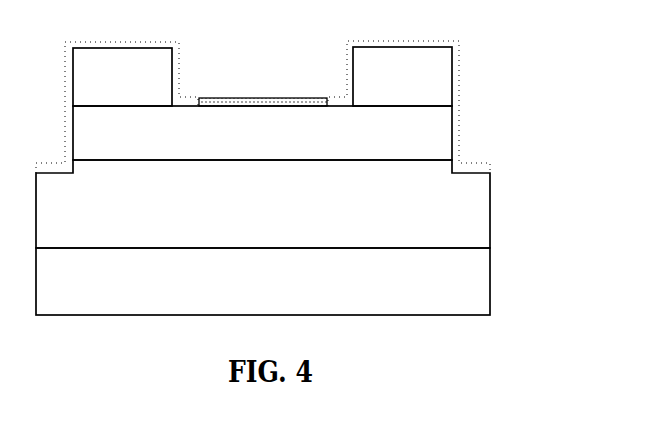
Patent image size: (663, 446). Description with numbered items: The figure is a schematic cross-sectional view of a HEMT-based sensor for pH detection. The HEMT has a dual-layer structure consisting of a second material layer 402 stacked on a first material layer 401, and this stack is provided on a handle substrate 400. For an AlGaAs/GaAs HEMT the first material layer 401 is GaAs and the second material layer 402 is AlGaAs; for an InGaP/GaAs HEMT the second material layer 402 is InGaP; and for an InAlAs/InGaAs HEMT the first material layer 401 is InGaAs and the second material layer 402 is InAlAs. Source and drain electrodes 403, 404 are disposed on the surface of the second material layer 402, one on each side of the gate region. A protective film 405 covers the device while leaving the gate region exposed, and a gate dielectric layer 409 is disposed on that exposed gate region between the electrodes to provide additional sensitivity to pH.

The handle substrate 400 is at (478, 288).
The first material layer 401 is at (478, 218).
The second material layer 402 is at (433, 147).
The source electrode 403 is at (154, 66).
The drain electrode 404 is at (442, 95).
The protective film 405 is at (458, 118).
The gate dielectric layer 409 is at (318, 102).